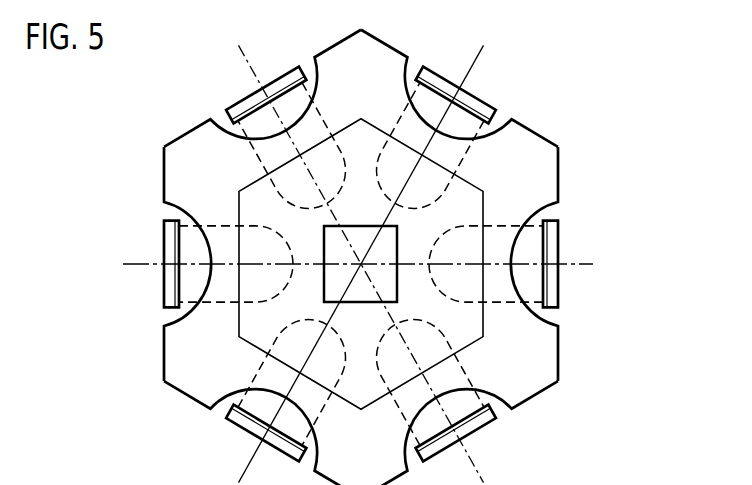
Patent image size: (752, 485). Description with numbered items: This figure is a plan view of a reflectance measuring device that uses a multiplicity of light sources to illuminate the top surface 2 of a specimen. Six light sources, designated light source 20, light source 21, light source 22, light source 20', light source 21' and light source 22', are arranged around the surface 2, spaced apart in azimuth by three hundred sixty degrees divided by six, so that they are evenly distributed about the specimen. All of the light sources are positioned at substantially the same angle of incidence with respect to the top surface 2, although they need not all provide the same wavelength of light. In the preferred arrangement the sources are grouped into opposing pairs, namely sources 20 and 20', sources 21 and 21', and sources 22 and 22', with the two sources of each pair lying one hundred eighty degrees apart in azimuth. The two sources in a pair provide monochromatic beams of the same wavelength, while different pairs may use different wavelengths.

The surface 2 is at (340, 253).
The light source 20 is at (579, 264).
The light source 20' is at (141, 264).
The light source 21 is at (474, 436).
The light source 21' is at (266, 75).
The light source 22 is at (266, 445).
The light source 22' is at (480, 95).